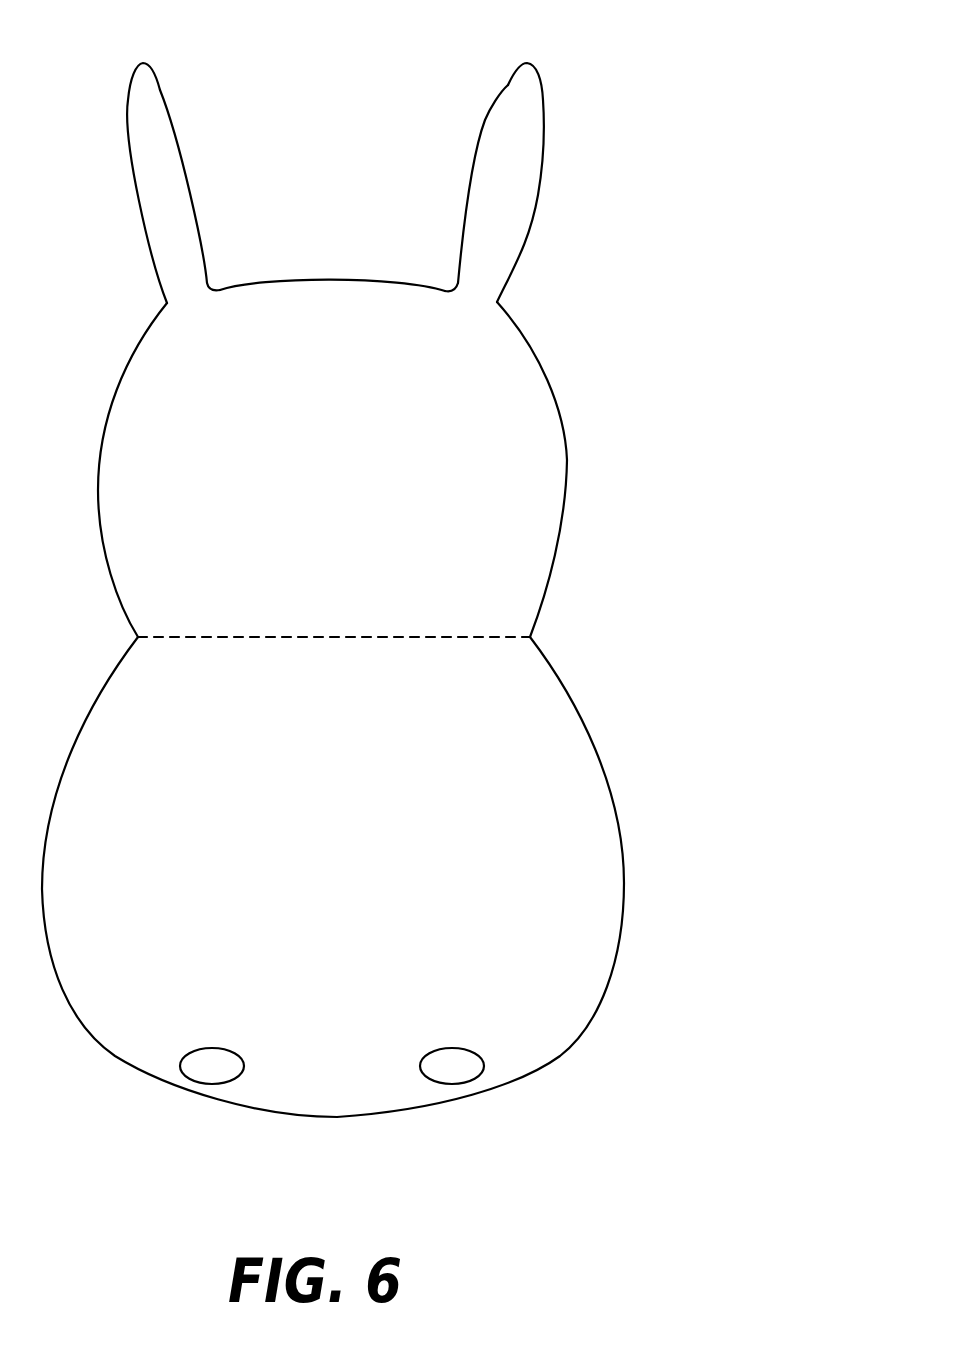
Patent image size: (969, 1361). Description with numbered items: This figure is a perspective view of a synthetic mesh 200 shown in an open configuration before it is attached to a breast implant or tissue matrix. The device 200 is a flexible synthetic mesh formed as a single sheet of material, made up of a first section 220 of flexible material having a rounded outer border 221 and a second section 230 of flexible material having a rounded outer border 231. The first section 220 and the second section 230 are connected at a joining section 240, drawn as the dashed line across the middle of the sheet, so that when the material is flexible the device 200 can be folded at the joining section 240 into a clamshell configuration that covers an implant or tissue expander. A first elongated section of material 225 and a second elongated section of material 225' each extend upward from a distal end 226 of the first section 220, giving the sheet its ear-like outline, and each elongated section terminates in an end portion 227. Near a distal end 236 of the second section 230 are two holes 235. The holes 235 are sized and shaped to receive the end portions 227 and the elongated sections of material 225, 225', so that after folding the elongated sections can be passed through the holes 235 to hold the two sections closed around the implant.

The synthetic mesh 200 is at (683, 158).
The first section 220 is at (382, 324).
The rounded outer border 221 is at (548, 387).
The first elongated section of material 225 is at (234, 177).
The second elongated section of material 225' is at (553, 193).
The distal end 226 is at (292, 278).
The end portion 227 is at (150, 65).
The second section 230 is at (399, 910).
The rounded outer border 231 is at (624, 909).
The hole 235 is at (393, 1116).
The distal end 236 is at (470, 1090).
The joining section 240 is at (544, 637).